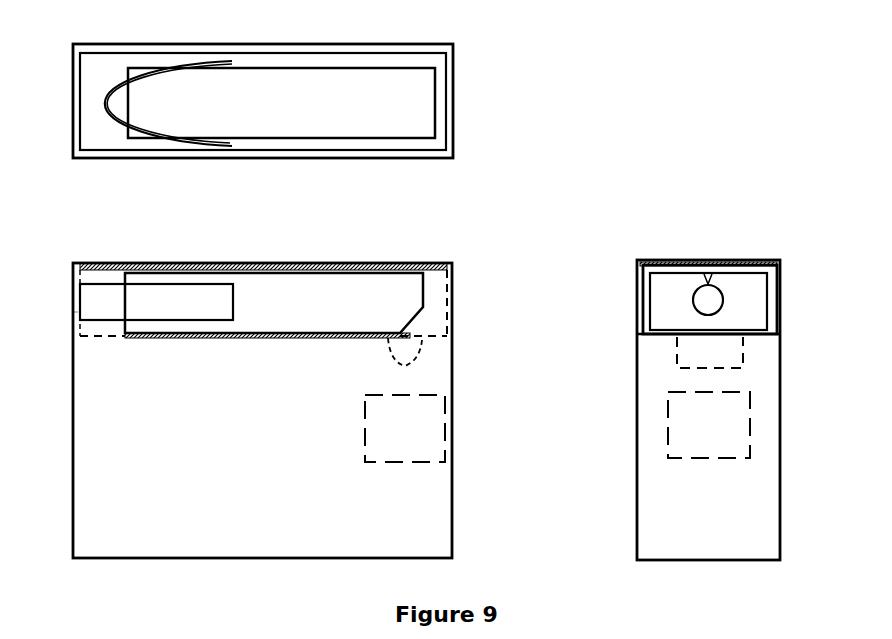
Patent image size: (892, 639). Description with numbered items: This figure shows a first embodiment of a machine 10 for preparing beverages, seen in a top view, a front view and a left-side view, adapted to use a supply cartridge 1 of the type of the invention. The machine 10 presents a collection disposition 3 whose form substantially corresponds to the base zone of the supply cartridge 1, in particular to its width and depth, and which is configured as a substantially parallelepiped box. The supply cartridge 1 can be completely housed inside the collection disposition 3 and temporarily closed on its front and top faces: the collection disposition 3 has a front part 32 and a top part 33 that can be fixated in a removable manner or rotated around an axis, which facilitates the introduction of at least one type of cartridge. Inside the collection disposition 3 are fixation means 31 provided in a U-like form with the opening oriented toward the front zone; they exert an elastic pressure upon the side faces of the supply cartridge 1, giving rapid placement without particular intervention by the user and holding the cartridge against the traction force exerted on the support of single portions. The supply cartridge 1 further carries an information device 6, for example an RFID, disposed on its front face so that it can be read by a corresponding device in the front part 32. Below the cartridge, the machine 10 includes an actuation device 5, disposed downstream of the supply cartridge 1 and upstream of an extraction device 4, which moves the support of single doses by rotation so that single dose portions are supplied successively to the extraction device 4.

The machine for preparing beverages 10 is at (407, 287).
The front part 32 is at (459, 100).
The supply cartridge 1 is at (446, 200).
The fixation means 31 is at (156, 190).
The top part 33 is at (411, 259).
The collection disposition 3 is at (815, 251).
The information device 6 is at (712, 259).
The actuation device 5 is at (549, 353).
The extraction device 4 is at (557, 427).